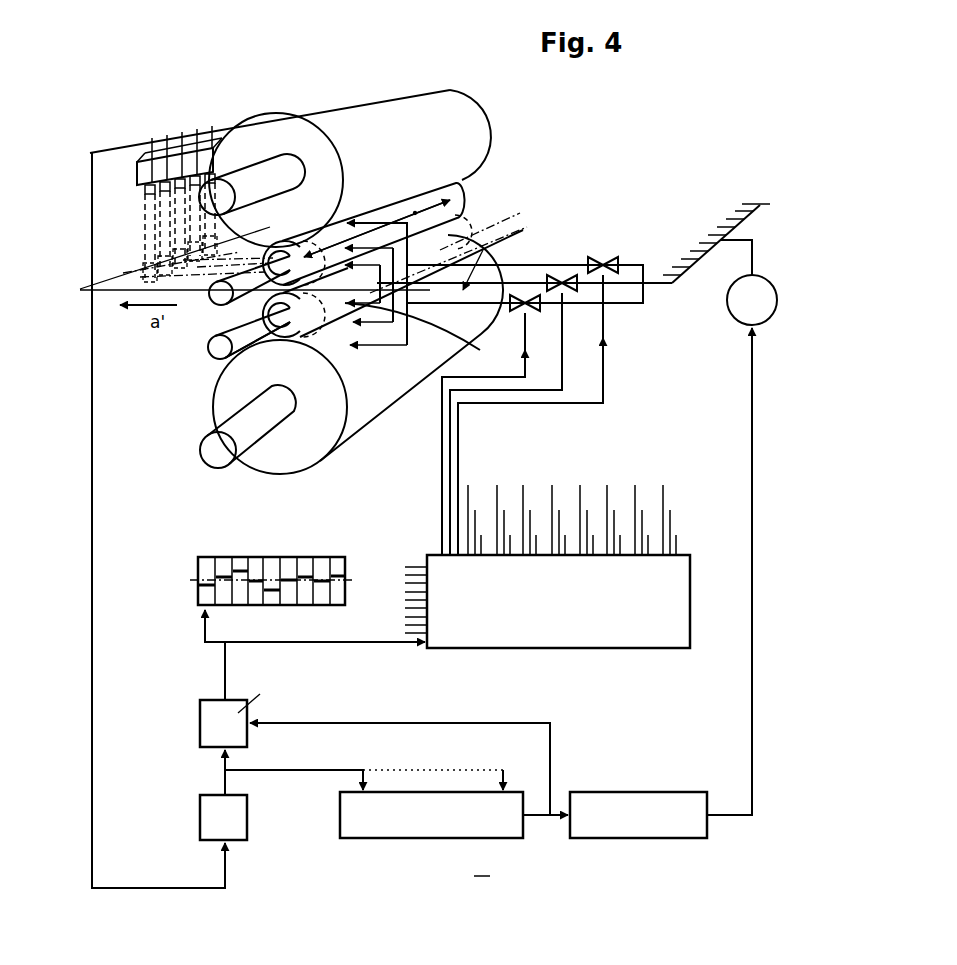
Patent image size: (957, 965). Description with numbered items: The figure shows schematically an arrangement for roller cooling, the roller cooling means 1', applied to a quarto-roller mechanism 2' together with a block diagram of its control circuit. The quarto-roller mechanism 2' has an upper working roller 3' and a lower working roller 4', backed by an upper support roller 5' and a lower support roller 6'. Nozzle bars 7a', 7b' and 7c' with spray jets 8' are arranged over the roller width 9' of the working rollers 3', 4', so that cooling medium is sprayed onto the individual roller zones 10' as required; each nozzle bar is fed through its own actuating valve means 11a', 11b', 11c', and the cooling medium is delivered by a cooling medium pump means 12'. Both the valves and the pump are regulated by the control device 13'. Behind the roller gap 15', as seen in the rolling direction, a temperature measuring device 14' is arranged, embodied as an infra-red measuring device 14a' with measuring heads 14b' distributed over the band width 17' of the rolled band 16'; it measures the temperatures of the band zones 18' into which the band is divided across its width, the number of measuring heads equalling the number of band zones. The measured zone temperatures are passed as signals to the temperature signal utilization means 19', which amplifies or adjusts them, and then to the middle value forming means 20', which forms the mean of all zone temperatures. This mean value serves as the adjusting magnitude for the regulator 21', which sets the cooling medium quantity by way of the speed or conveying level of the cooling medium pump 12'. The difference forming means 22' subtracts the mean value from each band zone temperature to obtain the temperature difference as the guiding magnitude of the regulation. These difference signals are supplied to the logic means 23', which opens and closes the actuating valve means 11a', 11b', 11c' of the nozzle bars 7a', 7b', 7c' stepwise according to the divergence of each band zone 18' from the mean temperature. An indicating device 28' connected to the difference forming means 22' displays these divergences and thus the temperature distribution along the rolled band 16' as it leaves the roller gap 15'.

The roller cooling means 1' is at (712, 219).
The quarto-roller mechanism 2' is at (270, 92).
The upper working roller 3' is at (372, 223).
The lower working roller 4' is at (376, 263).
The upper support roller 5' is at (345, 149).
The lower support roller 6' is at (351, 363).
The nozzle bar 7a' is at (375, 358).
The nozzle bar 7b' is at (387, 337).
The nozzle bar 7c' is at (425, 294).
The spray jets 8' is at (377, 154).
The roller width 9' is at (408, 133).
The roller zones 10' is at (383, 193).
The actuating valve means 11a' is at (639, 224).
The actuating valve means 11b' is at (599, 237).
The actuating valve means 11c' is at (560, 257).
The cooling medium pump means 12' is at (738, 290).
The control device 13' is at (410, 837).
The temperature measuring device 14' is at (134, 179).
The infra-red measuring device 14a' is at (179, 127).
The measuring heads 14b' is at (131, 227).
The roller gap 15' is at (255, 325).
The rolled band 16' is at (237, 278).
The band width 17' is at (524, 241).
The band zones 18' is at (312, 253).
The temperature signal utilization means 19' is at (255, 796).
The middle value forming means 20' is at (428, 845).
The regulator 21' is at (501, 607).
The difference forming means 22' is at (286, 678).
The logic means 23' is at (547, 482).
The indicating device 28' is at (241, 563).